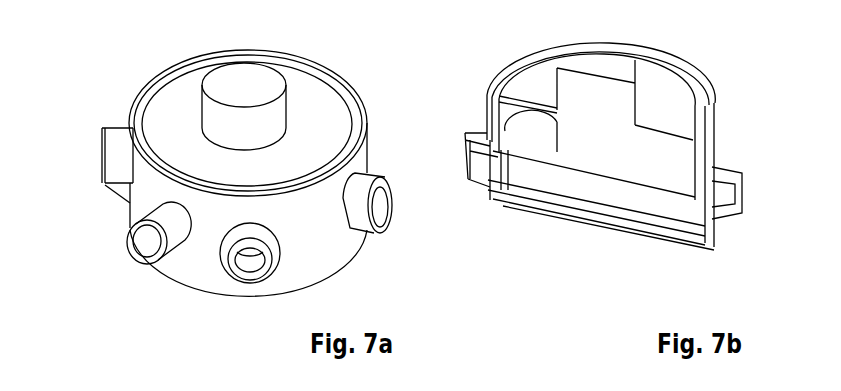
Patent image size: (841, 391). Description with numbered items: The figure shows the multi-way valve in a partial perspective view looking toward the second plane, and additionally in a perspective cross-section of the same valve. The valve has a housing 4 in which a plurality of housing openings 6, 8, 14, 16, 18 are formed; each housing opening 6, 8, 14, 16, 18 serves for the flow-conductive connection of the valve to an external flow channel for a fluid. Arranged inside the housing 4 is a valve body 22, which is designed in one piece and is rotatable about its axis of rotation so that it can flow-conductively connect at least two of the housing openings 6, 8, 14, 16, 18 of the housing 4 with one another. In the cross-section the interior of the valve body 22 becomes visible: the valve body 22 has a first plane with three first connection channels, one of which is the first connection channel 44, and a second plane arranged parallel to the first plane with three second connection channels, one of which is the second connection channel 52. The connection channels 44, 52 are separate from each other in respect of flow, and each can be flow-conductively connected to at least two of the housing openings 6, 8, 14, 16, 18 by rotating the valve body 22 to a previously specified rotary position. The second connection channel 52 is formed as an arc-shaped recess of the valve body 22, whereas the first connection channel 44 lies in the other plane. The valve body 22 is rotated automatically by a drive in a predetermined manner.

In FIG. 7A, the housing 4 is at (138, 205).
In FIG. 7A, the housing opening 6 is at (100, 140).
In FIG. 7A, the housing opening 8 is at (100, 188).
In FIG. 7B, the housing opening 8 is at (476, 180).
In FIG. 7A, the valve body 22 is at (175, 108).
In FIG. 7A, the housing opening 18 is at (144, 257).
In FIG. 7A, the housing opening 16 is at (252, 277).
In FIG. 7B, the first connection channel 44 is at (572, 200).
In FIG. 7B, the second connection channel 52 is at (526, 143).
In FIG. 7B, the housing opening 14 is at (700, 197).